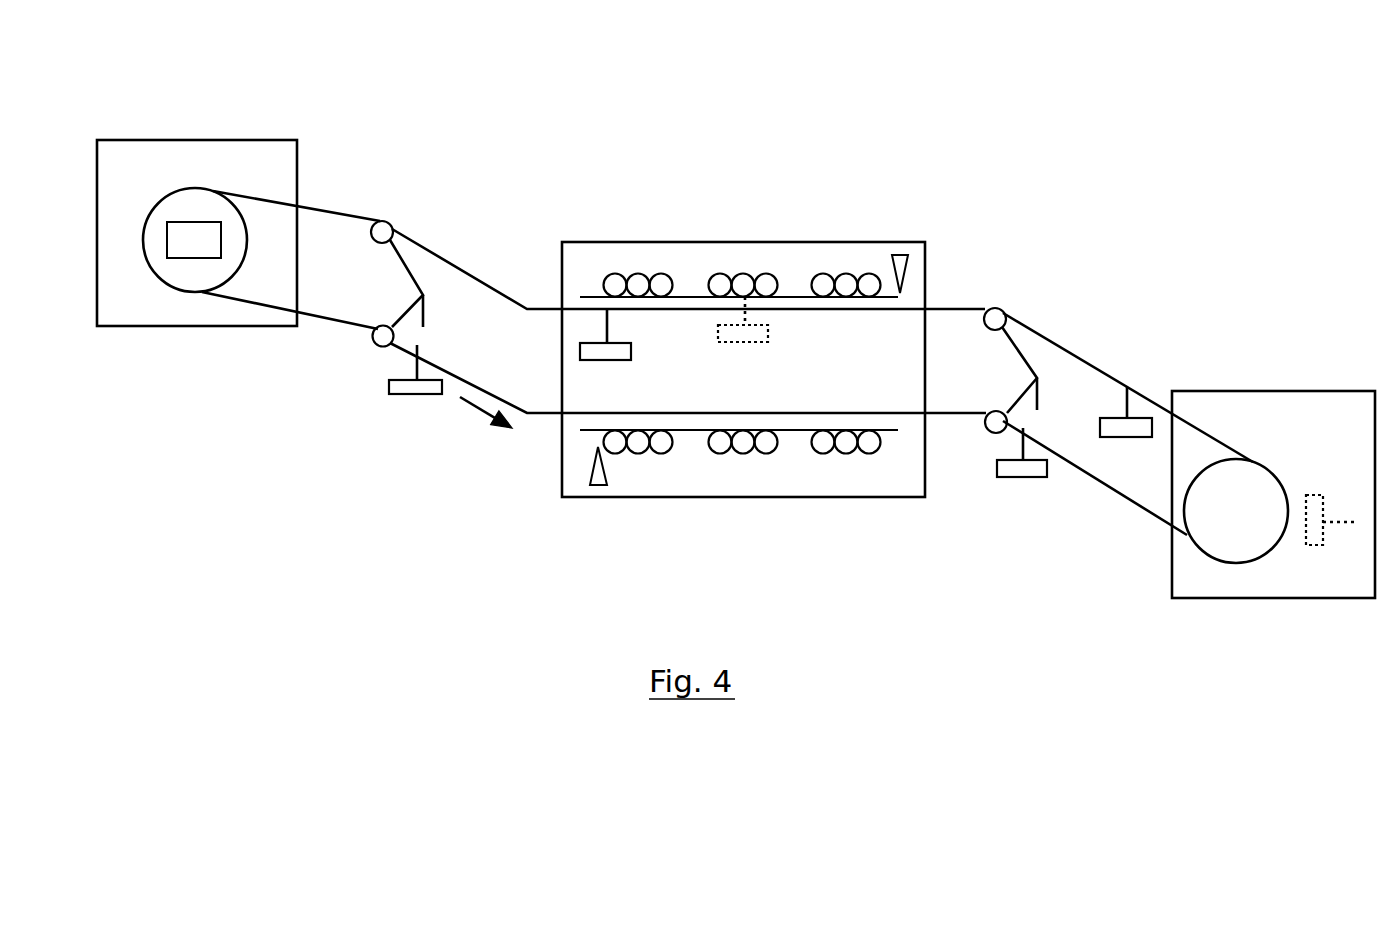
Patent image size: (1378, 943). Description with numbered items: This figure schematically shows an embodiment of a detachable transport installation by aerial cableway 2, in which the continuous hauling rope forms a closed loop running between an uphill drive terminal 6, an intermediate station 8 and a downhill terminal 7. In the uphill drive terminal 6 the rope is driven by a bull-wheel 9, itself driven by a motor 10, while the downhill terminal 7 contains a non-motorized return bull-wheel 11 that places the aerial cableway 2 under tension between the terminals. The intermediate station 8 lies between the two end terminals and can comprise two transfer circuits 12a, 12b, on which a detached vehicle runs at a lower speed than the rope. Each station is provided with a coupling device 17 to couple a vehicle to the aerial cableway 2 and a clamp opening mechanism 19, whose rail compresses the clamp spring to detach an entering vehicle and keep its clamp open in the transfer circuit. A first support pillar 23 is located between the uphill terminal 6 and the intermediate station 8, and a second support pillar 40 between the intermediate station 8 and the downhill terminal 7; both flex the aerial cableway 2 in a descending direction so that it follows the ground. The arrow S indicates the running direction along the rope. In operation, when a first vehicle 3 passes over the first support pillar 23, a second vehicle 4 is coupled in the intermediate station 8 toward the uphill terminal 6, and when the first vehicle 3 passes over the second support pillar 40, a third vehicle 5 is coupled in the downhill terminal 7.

The aerial cableway 2 is at (1097, 477).
The first vehicle 3 is at (389, 387).
The second vehicle 4 is at (631, 352).
The third vehicle 5 is at (1115, 418).
The uphill drive terminal 6 is at (148, 140).
The downhill terminal 7 is at (1220, 391).
The intermediate station 8 is at (613, 241).
The bull-wheel 9 is at (182, 268).
The motor 10 is at (194, 240).
The return bull-wheel 11 is at (1238, 537).
The transfer circuit 12a is at (792, 295).
The transfer circuit 12b is at (797, 432).
The coupling device 17 is at (591, 258).
The clamp opening mechanism 19 is at (910, 278).
The first support pillar 23 is at (425, 311).
The second support pillar 40 is at (1037, 393).
The transport direction S is at (473, 410).